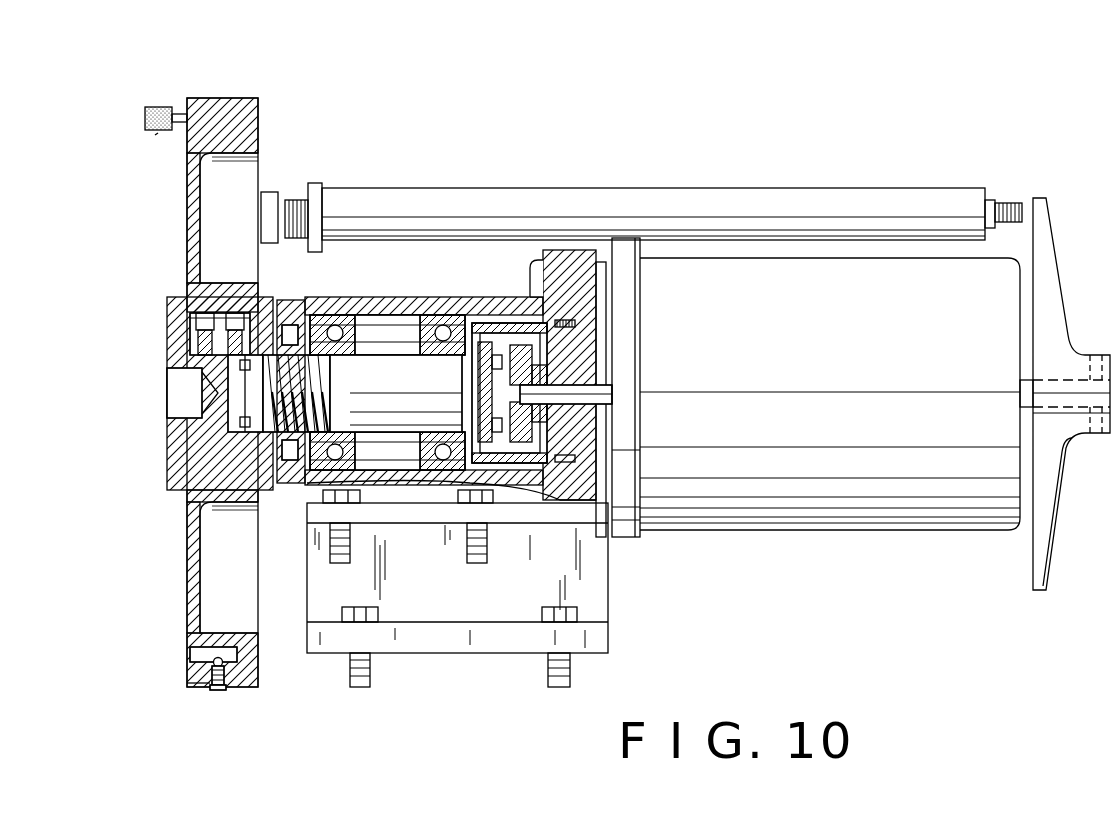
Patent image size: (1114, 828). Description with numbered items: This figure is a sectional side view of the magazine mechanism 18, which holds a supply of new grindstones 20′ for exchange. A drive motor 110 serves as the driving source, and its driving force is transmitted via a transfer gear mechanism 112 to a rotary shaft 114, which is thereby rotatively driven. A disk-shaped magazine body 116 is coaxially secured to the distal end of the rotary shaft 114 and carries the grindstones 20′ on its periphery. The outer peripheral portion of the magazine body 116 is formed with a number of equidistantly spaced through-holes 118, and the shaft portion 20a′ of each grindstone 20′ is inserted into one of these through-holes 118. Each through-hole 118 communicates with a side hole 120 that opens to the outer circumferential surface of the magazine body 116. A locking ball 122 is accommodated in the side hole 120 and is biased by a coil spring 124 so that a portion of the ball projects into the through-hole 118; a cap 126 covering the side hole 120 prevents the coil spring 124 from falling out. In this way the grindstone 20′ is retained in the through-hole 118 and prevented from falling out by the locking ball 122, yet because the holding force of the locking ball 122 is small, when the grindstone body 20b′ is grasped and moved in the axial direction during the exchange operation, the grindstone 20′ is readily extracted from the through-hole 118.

The magazine mechanism 18 is at (410, 187).
The grindstone 20′ is at (157, 133).
The shaft portion 20a′ is at (180, 114).
The grindstone body 20b′ is at (160, 107).
The drive motor 110 is at (901, 490).
The transfer gear mechanism 112 is at (545, 425).
The rotary shaft 114 is at (393, 374).
The magazine body 116 is at (190, 262).
The through-hole 118 is at (190, 651).
The side hole 120 is at (186, 681).
The locking ball 122 is at (216, 658).
The coil spring 124 is at (233, 688).
The cap 126 is at (220, 692).